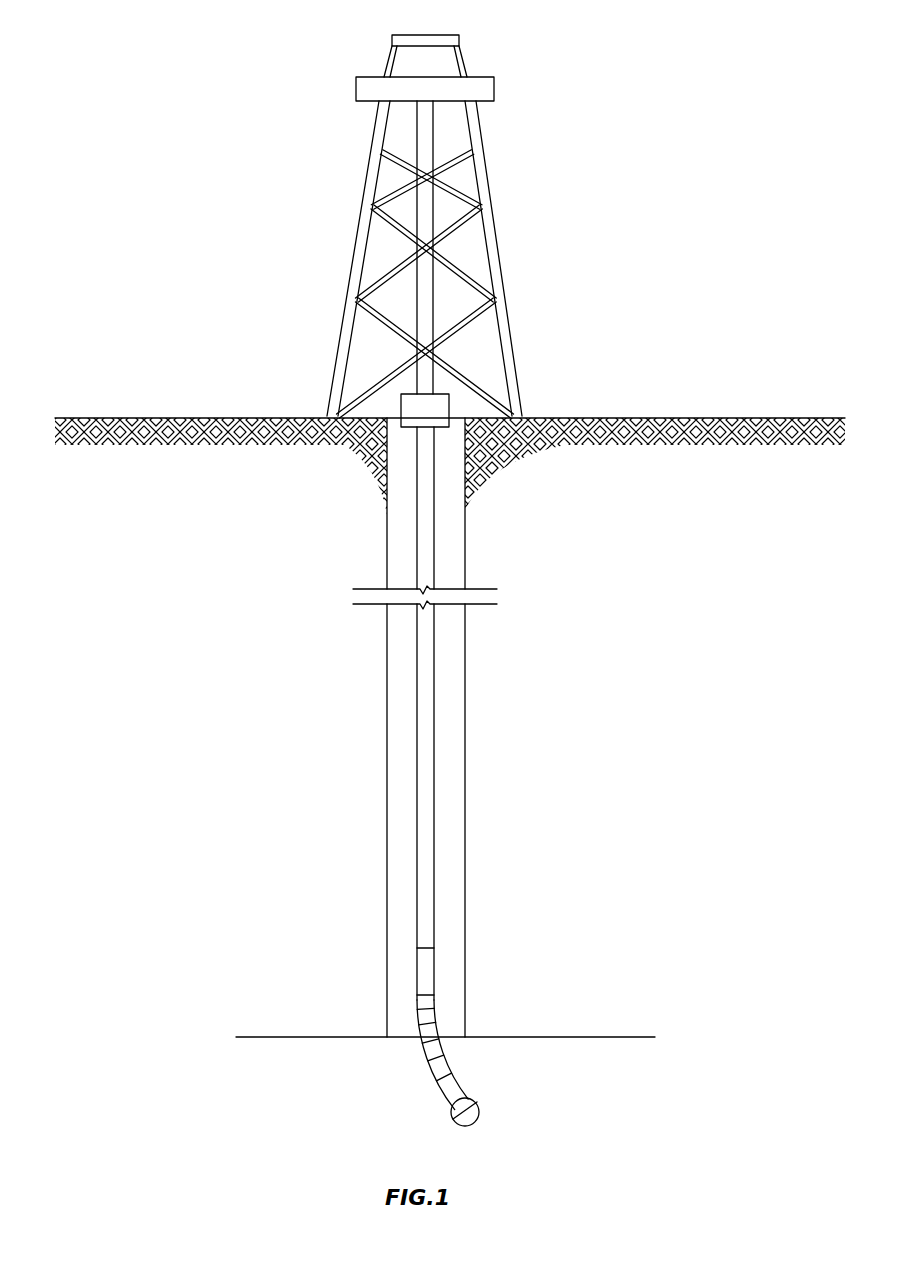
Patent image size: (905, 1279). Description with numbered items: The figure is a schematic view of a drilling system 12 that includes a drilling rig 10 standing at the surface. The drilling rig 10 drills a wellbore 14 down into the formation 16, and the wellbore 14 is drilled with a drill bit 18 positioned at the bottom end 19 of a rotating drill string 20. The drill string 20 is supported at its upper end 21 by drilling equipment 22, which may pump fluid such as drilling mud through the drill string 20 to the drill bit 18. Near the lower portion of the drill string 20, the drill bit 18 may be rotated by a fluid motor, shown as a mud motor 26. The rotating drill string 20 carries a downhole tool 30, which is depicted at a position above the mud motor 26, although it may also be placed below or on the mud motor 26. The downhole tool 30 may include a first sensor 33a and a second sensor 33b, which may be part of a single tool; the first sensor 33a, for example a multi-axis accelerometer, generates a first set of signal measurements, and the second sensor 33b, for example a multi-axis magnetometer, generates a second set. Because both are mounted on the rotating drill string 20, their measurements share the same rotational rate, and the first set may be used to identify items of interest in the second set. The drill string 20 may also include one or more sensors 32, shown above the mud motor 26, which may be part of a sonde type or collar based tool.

The drilling system 12 is at (200, 120).
The drilling rig 10 is at (482, 178).
The drilling equipment 22 is at (450, 405).
The upper end 21 is at (418, 455).
The drill string 20 is at (417, 694).
The wellbore 14 is at (466, 678).
The formation 16 is at (713, 771).
The downhole tool 30 is at (442, 962).
The first sensor 33a is at (433, 955).
The second sensor 33b is at (433, 1000).
The sensors 32 is at (478, 1000).
The bottom end 19 is at (388, 1036).
The mud motor 26 is at (417, 1044).
The drill bit 18 is at (479, 1108).